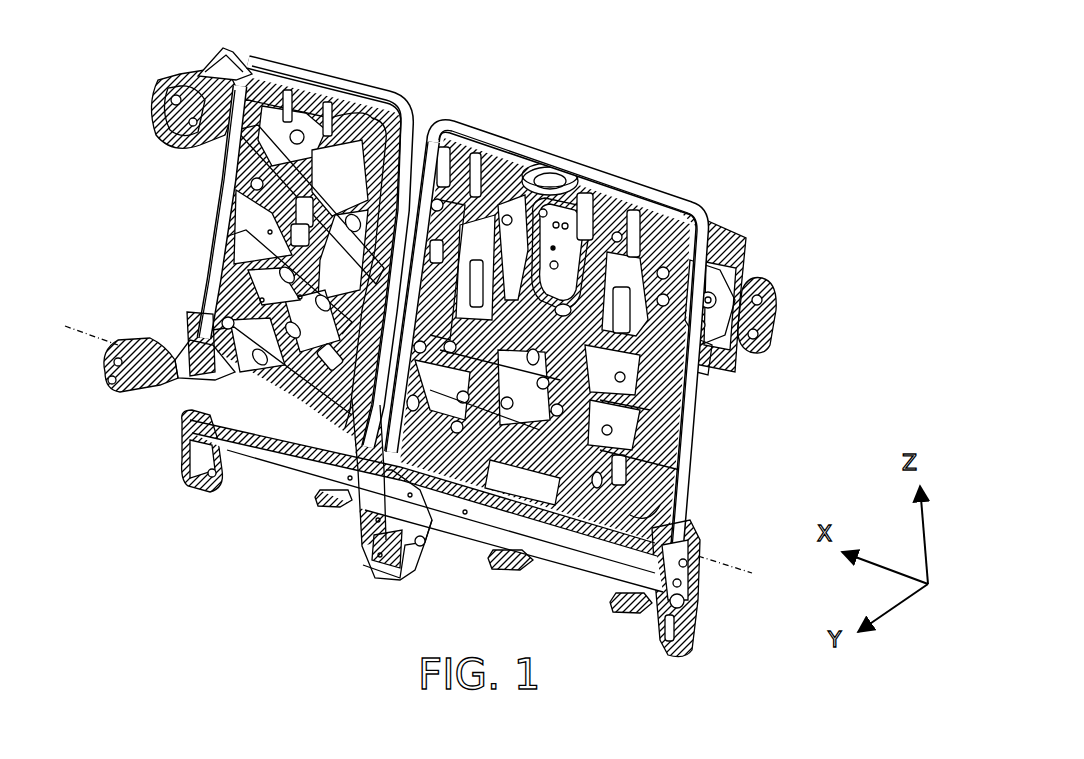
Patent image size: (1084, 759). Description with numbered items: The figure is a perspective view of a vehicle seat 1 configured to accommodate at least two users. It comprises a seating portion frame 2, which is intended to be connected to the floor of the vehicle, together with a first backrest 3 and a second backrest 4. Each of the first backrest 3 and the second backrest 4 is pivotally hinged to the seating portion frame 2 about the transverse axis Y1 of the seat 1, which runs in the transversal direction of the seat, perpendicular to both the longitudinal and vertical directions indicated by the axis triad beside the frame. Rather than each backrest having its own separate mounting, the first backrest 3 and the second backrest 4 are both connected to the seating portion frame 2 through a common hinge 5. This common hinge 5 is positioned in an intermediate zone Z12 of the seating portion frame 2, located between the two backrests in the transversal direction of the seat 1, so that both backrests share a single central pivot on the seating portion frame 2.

The vehicle seat 1 is at (606, 104).
The seating portion frame 2 is at (350, 575).
The first backrest 3 is at (393, 93).
The second backrest 4 is at (681, 191).
The common hinge 5 is at (345, 454).
The intermediate zone Z12 is at (313, 539).
The transverse axis Y1 is at (737, 563).